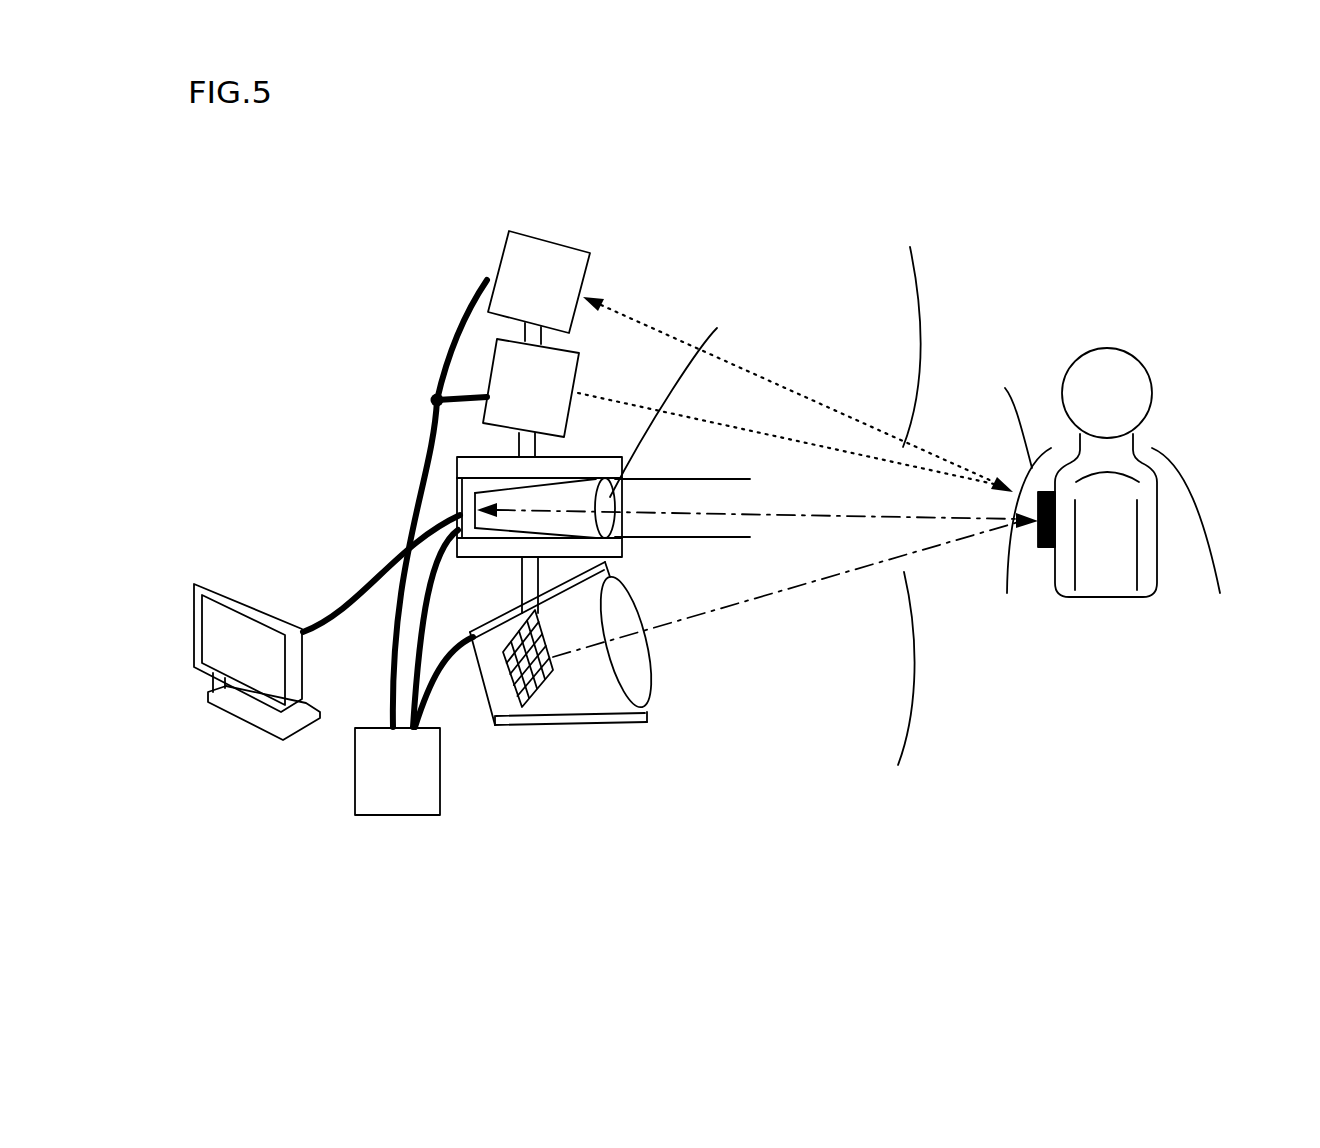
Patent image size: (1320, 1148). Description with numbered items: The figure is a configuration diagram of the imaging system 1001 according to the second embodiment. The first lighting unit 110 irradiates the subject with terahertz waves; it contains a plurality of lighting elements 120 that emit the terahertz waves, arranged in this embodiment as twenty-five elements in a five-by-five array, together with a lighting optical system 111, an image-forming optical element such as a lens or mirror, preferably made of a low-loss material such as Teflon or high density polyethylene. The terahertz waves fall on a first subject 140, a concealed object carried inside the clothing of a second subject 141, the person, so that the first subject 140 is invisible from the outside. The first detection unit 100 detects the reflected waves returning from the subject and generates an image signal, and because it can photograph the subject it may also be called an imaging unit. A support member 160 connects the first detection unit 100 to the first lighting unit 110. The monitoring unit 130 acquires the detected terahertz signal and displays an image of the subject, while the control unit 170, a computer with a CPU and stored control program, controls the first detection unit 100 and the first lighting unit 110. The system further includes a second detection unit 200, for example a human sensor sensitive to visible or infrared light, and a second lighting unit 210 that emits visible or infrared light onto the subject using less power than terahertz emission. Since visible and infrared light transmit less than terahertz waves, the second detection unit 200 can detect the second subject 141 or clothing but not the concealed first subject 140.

The imaging system 1001 is at (592, 192).
The first detection unit 100 is at (457, 472).
The first lighting unit 110 is at (627, 727).
The lighting optical system 111 is at (636, 660).
The lighting elements 120 is at (530, 715).
The monitoring unit 130 is at (197, 578).
The first subject 140 is at (1050, 540).
The second subject 141 is at (1103, 583).
The support member 160 is at (527, 582).
The control unit 170 is at (367, 815).
The second detection unit 200 is at (492, 275).
The second lighting unit 210 is at (488, 390).